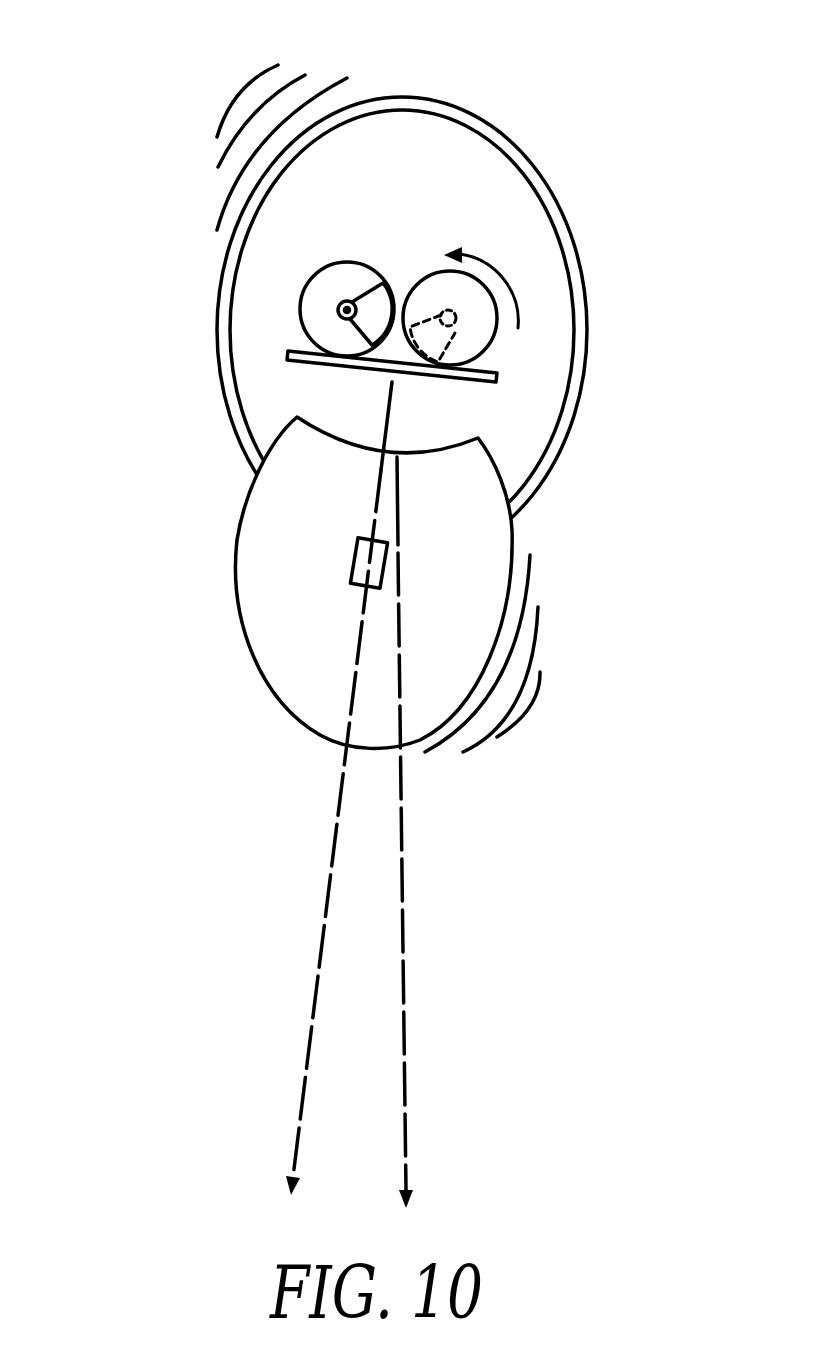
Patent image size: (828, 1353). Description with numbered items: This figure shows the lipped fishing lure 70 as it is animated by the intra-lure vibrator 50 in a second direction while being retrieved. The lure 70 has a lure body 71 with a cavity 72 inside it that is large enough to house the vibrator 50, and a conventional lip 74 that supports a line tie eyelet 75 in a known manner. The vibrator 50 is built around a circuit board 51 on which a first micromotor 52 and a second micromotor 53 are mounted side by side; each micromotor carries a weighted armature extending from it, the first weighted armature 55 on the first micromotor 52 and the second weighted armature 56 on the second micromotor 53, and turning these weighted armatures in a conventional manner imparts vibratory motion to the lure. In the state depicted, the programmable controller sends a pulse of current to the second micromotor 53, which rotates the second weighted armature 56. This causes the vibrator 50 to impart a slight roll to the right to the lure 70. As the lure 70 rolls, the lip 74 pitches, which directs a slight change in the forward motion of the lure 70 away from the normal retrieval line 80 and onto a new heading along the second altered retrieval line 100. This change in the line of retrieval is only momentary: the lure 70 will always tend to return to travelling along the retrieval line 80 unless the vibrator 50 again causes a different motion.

The fishing lure 70 is at (530, 82).
The lure body 71 is at (410, 97).
The cavity 72 is at (252, 253).
The lip 74 is at (238, 524).
The line tie eyelet 75 is at (352, 569).
The vibrator 50 is at (270, 302).
The circuit board 51 is at (288, 358).
The first micromotor 52 is at (287, 349).
The second micromotor 53 is at (492, 370).
The first cam 55 is at (338, 312).
The second weighted armature 56 is at (453, 343).
The retrieval line 80 is at (404, 916).
The second altered retrieval line 100 is at (334, 838).